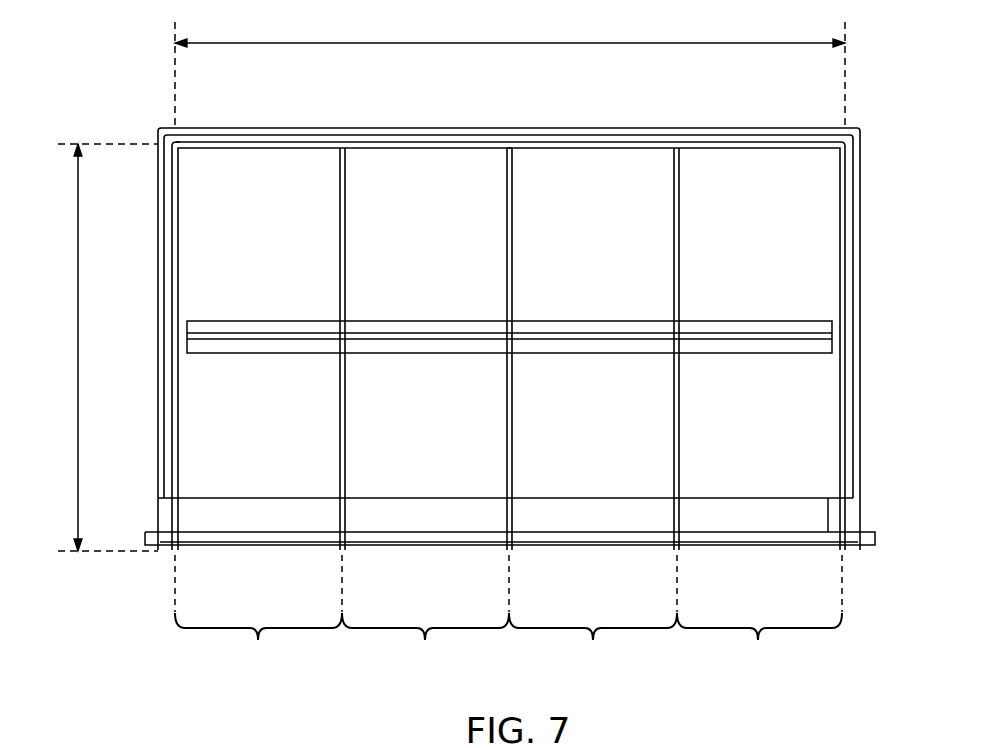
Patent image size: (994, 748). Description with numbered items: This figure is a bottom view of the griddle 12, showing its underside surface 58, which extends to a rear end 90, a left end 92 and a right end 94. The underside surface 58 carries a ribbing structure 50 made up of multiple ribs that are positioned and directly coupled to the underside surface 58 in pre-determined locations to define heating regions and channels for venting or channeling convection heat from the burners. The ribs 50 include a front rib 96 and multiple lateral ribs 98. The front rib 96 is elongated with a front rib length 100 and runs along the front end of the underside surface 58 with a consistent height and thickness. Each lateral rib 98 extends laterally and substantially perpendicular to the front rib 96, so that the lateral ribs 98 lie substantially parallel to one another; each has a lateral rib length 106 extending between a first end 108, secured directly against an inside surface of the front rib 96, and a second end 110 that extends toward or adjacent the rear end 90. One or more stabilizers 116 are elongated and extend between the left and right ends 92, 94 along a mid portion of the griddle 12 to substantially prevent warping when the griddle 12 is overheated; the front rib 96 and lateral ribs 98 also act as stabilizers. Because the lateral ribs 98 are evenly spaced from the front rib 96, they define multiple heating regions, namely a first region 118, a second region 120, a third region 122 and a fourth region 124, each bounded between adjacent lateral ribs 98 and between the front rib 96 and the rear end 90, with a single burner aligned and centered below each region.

The griddle 12 is at (887, 148).
The ribbing structure 50 is at (336, 184).
The underside surface 58 is at (780, 386).
The rear end 90 is at (752, 546).
The left end 92 is at (172, 440).
The right end 94 is at (838, 386).
The front rib 96 is at (572, 146).
The lateral ribs 98 is at (704, 144).
The front rib length 100 is at (640, 24).
The lateral rib length 106 is at (78, 226).
The first end 108 is at (508, 149).
The second end 110 is at (512, 549).
The stabilizers 116 is at (423, 340).
The first region 118 is at (258, 614).
The second region 120 is at (425, 614).
The third region 122 is at (593, 614).
The fourth region 124 is at (759, 614).